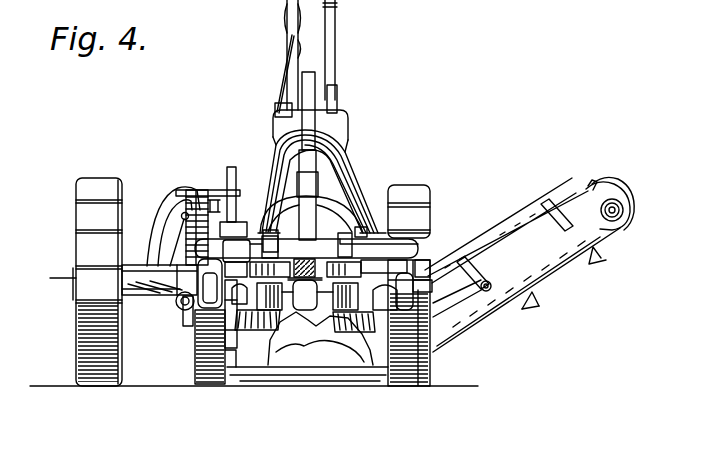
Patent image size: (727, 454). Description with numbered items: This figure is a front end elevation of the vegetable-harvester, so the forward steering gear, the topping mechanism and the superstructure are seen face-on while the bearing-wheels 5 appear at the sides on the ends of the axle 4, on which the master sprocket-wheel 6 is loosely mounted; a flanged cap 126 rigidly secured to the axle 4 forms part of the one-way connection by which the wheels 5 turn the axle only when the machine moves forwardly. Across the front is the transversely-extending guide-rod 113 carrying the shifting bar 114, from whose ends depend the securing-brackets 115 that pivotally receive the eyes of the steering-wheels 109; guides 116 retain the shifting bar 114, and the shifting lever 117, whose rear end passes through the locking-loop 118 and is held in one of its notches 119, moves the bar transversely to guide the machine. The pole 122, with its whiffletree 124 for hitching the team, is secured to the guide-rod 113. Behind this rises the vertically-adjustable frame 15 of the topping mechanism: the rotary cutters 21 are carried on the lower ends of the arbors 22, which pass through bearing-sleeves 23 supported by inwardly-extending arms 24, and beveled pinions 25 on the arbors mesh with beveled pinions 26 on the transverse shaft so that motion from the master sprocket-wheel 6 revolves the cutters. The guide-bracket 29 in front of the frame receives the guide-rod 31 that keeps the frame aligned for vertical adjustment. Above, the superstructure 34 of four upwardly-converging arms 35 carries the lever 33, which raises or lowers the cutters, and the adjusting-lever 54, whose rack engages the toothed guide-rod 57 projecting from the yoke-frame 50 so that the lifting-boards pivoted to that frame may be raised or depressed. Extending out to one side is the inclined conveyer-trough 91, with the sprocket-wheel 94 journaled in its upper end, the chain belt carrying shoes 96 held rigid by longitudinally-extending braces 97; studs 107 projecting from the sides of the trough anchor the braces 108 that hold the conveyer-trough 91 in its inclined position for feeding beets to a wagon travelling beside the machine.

The axle 4 is at (56, 284).
The bearing-wheels 5 is at (76, 221).
The master sprocket-wheel 6 is at (183, 200).
The frame 15 is at (230, 382).
The rotary cutters 21 is at (293, 372).
The arbors 22 is at (255, 370).
The bearing-sleeves 23 is at (272, 370).
The arms 24 is at (333, 367).
The beveled pinions 25 is at (225, 330).
The beveled pinions 26 is at (217, 315).
The guide-bracket 29 is at (312, 223).
The guide-rod 31 is at (310, 183).
The lever 33 is at (292, 108).
The superstructure 34 is at (310, 140).
The arms 35 is at (340, 173).
The yoke-frame 50 is at (280, 202).
The adjusting-lever 54 is at (325, 72).
The guide-rod 57 is at (307, 72).
The conveyer-trough 91 is at (512, 262).
The sprocket-wheel 94 is at (633, 214).
The shoes 96 is at (536, 309).
The braces 97 is at (539, 303).
The studs 107 is at (488, 291).
The braces 108 is at (478, 312).
The steering-wheels 109 is at (217, 352).
The guide-rod 113 is at (190, 272).
The shifting bar 114 is at (306, 248).
The securing-brackets 115 is at (176, 302).
The guides 116 is at (263, 242).
The shifting lever 117 is at (233, 170).
The locking-loop 118 is at (215, 191).
The notches 119 is at (230, 218).
The pole 122 is at (327, 262).
The whiffletree 124 is at (295, 263).
The flanged cap 126 is at (420, 252).